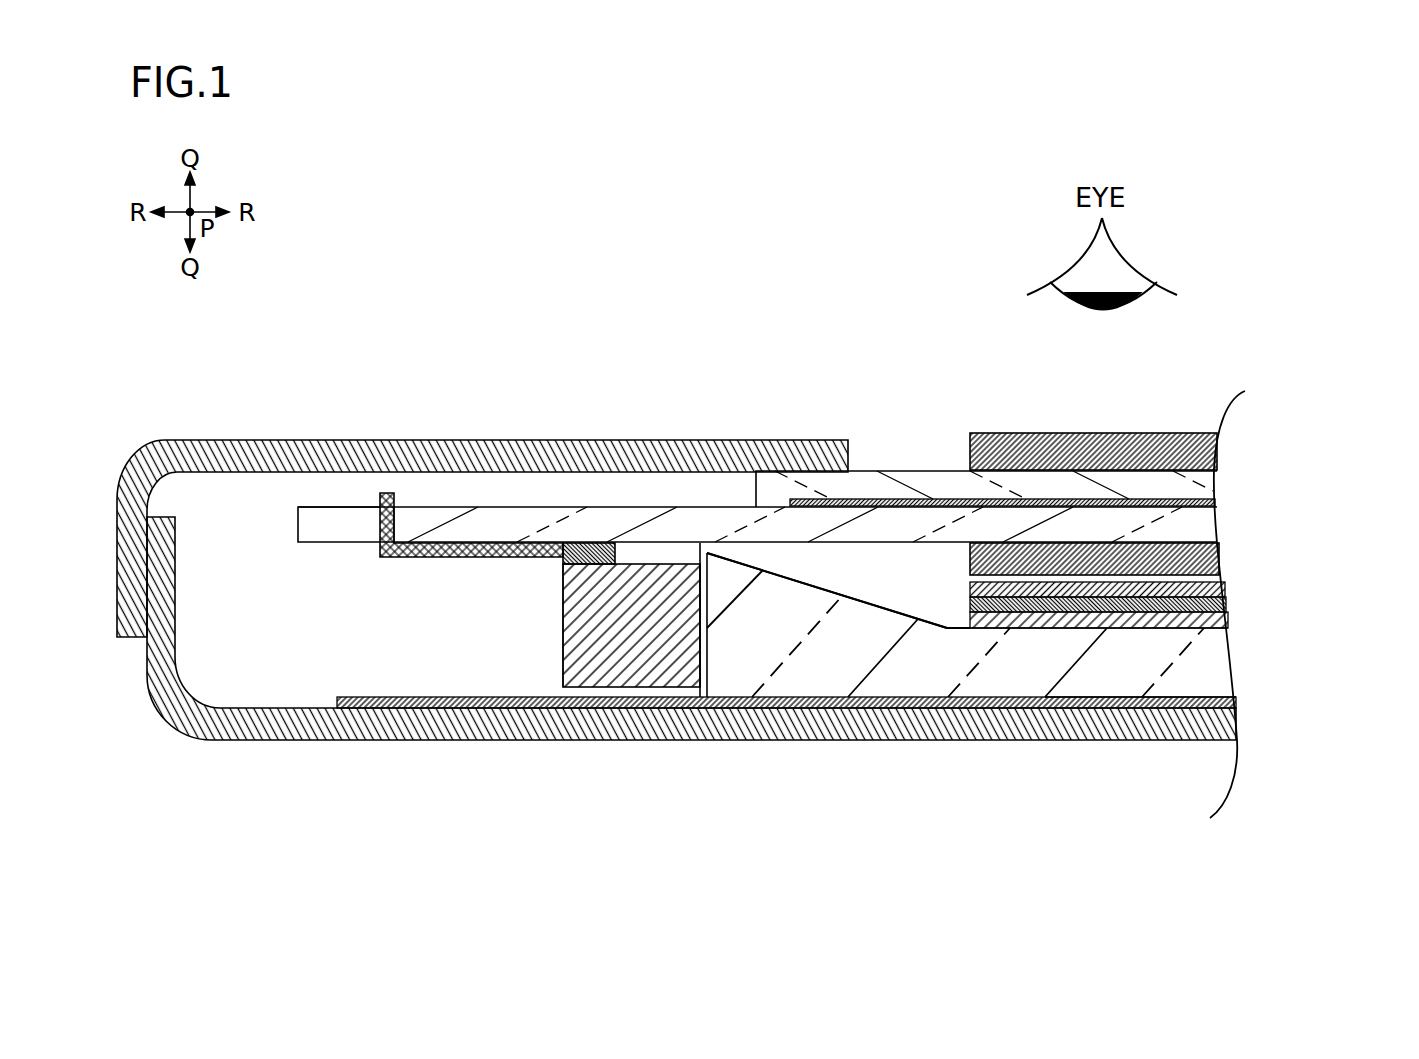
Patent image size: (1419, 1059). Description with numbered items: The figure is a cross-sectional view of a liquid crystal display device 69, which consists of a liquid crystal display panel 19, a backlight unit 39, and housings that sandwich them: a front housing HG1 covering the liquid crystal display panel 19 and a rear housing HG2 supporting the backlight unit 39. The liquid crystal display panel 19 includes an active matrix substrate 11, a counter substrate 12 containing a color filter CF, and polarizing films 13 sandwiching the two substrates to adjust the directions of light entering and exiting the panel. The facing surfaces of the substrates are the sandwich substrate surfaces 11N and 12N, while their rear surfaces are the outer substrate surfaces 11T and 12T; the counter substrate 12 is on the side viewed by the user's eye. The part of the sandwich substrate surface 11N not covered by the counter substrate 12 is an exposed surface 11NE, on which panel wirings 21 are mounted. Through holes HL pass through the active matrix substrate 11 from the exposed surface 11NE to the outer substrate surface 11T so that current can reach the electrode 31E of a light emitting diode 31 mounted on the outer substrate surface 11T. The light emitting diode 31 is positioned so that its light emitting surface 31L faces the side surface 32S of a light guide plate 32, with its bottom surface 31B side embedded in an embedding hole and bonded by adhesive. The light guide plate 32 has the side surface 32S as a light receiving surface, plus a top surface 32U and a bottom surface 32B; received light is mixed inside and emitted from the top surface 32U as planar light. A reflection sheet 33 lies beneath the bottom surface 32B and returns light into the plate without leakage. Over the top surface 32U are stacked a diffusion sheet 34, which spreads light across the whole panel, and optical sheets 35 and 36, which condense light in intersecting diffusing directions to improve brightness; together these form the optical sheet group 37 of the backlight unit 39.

The front housing HG1 is at (482, 538).
The rear housing HG2 is at (691, 628).
The active matrix substrate 11 is at (757, 524).
The exposed surface 11NE is at (360, 507).
The sandwich substrate surface 11N is at (1207, 508).
The outer substrate surface 11T is at (1190, 542).
The counter substrate 12 is at (986, 489).
The outer substrate surface 12T is at (1207, 471).
The sandwich substrate surface 12N is at (1190, 505).
The color filter CF is at (806, 497).
The polarizing film 13 is at (1094, 504).
The liquid crystal display panel 19 is at (1318, 425).
The panel wiring 21 is at (417, 558).
The through hole HL is at (380, 528).
The light emitting diode 31 is at (631, 625).
The bottom surface 31B is at (621, 545).
The electrode 31E is at (563, 566).
The light emitting surface 31L is at (700, 668).
The light guide plate 32 is at (1222, 668).
The side surface 32S is at (708, 655).
The top surface 32U is at (1067, 629).
The bottom surface 32B is at (1144, 690).
The reflection sheet 33 is at (1237, 705).
The diffusion sheet 34 is at (1128, 634).
The optical sheet 35 is at (1222, 605).
The optical sheet 36 is at (1222, 590).
The optical sheet group 37 is at (1146, 619).
The backlight unit 39 is at (1318, 583).
The liquid crystal display device 69 is at (1357, 425).